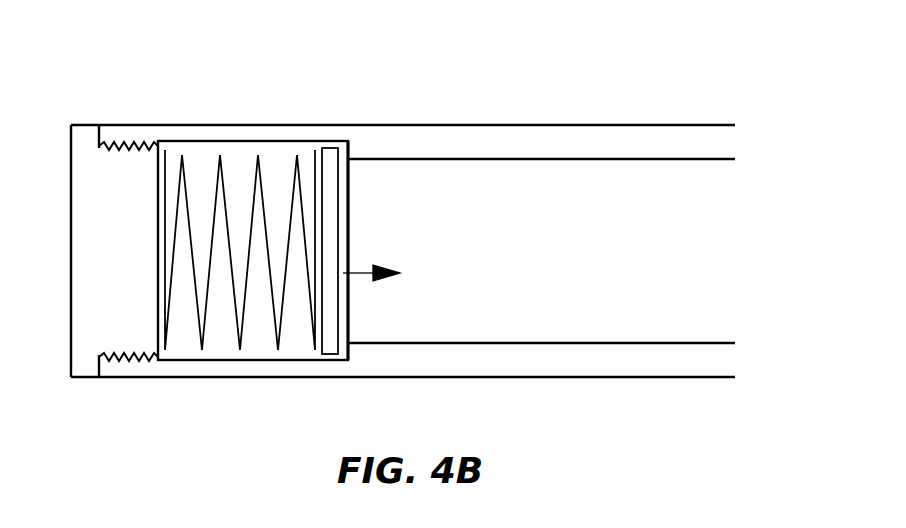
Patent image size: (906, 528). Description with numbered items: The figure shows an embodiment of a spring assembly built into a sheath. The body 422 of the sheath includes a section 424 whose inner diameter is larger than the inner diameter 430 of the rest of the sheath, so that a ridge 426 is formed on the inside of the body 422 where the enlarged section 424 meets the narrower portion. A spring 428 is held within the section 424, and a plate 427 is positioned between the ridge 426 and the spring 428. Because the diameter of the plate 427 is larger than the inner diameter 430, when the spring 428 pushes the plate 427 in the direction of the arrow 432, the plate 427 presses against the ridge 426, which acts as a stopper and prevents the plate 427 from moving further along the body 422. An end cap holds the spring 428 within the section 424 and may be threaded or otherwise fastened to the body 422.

The body 422 is at (598, 125).
The section 424 is at (348, 102).
The ridge 426 is at (349, 212).
The plate 427 is at (338, 147).
The spring 428 is at (205, 328).
The inner diameter 430 is at (688, 160).
The arrow 432 is at (371, 288).